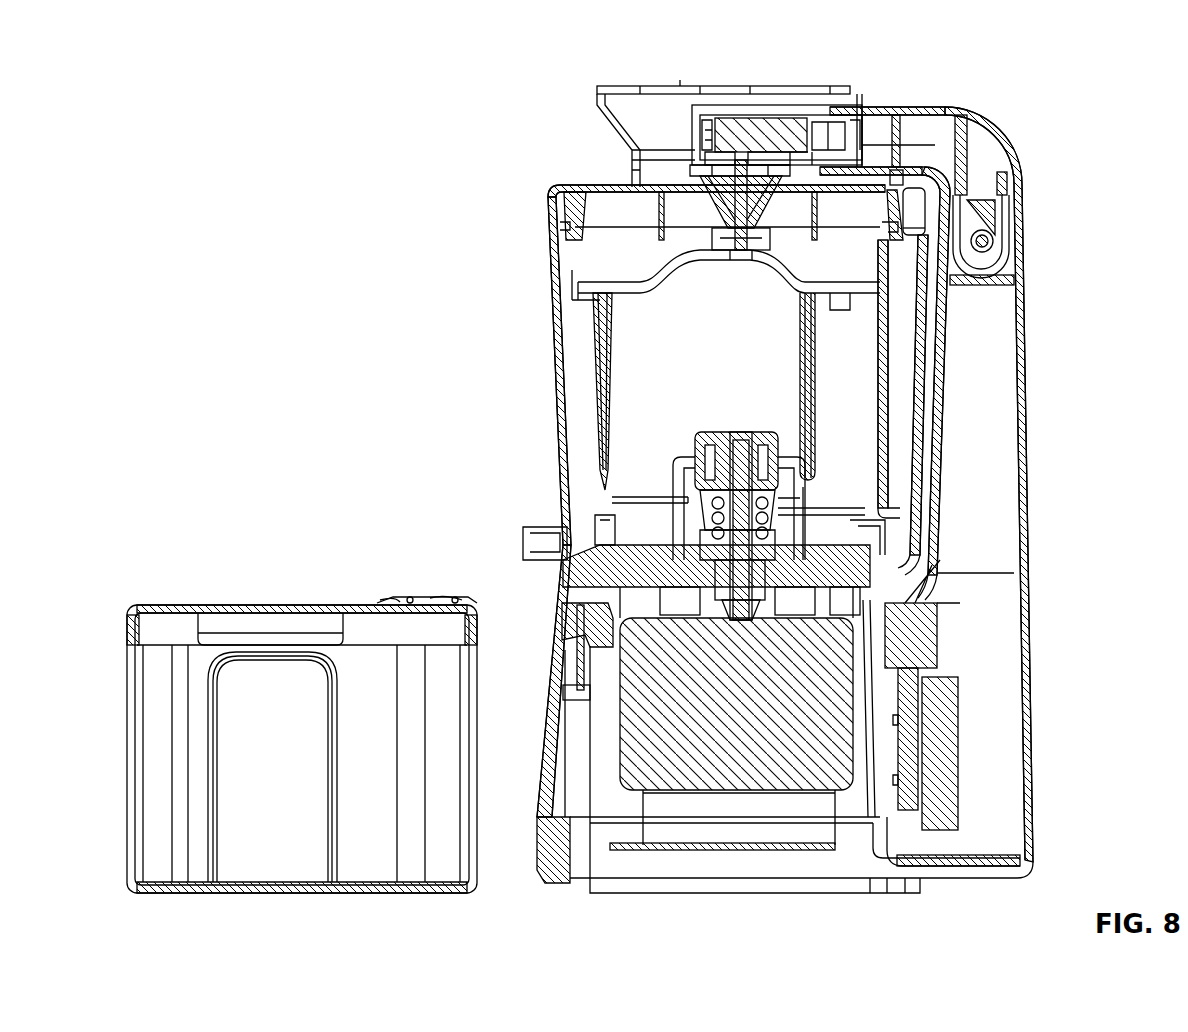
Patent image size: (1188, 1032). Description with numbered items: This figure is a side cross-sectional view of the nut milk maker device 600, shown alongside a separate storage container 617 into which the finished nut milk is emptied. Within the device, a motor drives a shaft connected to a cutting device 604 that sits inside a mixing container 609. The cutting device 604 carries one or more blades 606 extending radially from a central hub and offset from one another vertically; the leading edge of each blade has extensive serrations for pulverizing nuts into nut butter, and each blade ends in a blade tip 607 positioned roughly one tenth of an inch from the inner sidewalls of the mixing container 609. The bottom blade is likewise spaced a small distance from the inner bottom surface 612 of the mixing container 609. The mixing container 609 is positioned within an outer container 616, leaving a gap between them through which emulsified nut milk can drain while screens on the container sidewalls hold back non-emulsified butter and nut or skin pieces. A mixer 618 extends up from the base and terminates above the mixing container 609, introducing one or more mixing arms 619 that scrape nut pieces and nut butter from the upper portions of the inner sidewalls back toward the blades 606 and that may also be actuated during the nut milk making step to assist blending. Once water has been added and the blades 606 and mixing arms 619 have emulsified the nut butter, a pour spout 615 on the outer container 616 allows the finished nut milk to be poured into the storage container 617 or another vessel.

The nut milk maker device 600 is at (670, 455).
The cutting device 604 is at (747, 416).
The blades 606 is at (835, 510).
The blade tip 607 is at (604, 484).
The mixing container 609 is at (603, 520).
The inner bottom surface 612 is at (850, 520).
The pour spout 615 is at (527, 551).
The outer container 616 is at (552, 362).
The storage container 617 is at (250, 603).
The mixer 618 is at (936, 107).
The mixing arms 619 is at (613, 338).